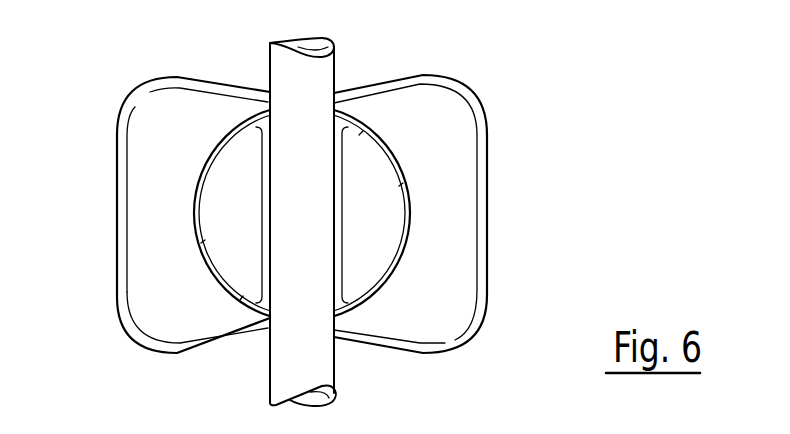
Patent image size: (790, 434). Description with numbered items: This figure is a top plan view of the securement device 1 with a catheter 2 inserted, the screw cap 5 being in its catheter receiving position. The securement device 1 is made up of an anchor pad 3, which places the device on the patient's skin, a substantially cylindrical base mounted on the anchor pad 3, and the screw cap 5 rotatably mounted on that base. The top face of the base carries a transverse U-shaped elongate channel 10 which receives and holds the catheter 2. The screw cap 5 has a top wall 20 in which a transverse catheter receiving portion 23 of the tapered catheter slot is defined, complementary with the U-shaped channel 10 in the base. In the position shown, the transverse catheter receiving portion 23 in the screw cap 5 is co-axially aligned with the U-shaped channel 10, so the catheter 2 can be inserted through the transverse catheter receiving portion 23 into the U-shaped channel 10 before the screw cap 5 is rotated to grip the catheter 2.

The securement device 1 is at (313, 208).
The catheter 2 is at (321, 204).
The anchor pad 3 is at (463, 220).
The screw cap 5 is at (235, 265).
The U-shaped channel 10 is at (343, 158).
The top wall 20 is at (217, 212).
The transverse catheter receiving portion 23 is at (258, 172).